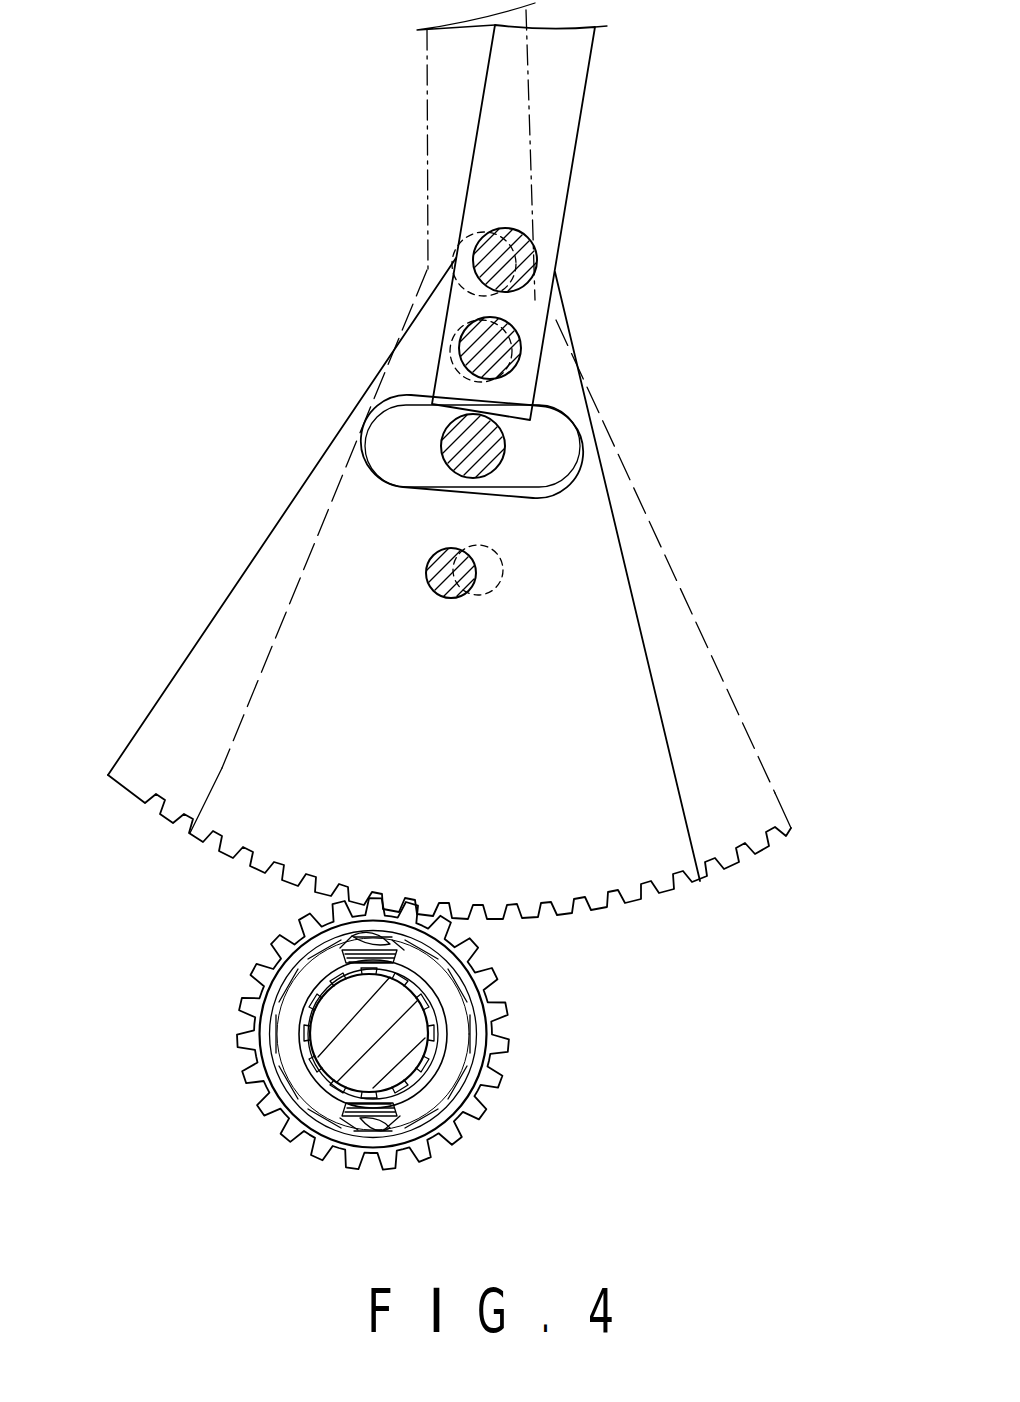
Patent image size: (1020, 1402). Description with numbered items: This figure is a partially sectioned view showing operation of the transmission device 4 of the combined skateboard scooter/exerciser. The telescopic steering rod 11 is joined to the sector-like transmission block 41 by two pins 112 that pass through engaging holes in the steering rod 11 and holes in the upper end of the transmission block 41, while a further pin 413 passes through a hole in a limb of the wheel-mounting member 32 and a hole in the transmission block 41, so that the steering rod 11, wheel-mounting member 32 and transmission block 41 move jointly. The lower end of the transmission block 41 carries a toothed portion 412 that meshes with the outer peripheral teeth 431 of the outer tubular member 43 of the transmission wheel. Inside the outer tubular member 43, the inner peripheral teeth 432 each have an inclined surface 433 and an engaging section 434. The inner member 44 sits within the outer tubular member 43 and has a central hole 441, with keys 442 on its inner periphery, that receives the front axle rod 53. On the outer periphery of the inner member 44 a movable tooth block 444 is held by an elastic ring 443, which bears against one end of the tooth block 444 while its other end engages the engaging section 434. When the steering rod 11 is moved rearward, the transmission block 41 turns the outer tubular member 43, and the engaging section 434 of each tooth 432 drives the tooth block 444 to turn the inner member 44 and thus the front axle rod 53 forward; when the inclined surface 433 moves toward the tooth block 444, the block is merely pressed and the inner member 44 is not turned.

The transmission device 4 is at (351, 1067).
The steering rod 11 is at (558, 132).
The pins 112 is at (493, 262).
The wheel-mounting member 32 is at (473, 450).
The transmission block 41 is at (454, 621).
The toothed portion 412 is at (625, 893).
The pin 413 is at (465, 577).
The outer tubular member 43 is at (307, 1067).
The outer peripheral teeth 431 is at (287, 1132).
The inner peripheral teeth 432 is at (295, 973).
The inclined surface 433 is at (275, 1007).
The engaging section 434 is at (403, 1140).
The inner member 44 is at (365, 1080).
The central hole 441 is at (430, 1050).
The keys 442 is at (430, 1032).
The elastic ring 443 is at (358, 1117).
The movable tooth block 444 is at (377, 1122).
The front axle rod 53 is at (390, 1047).